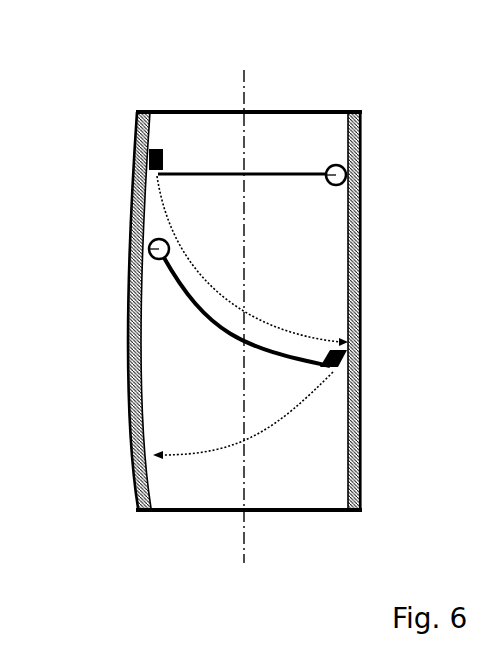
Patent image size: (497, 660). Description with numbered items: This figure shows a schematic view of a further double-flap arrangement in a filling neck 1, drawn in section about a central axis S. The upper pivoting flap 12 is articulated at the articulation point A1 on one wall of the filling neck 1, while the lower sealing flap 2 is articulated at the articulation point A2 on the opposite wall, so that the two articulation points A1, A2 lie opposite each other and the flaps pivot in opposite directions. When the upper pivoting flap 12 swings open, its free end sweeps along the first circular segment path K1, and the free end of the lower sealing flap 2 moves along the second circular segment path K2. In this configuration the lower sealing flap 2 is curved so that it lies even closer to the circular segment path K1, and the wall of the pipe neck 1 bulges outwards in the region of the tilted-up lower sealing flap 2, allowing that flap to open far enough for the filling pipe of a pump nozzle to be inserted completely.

The filling neck 1 is at (361, 140).
The lower sealing flap 2 is at (270, 353).
The upper pivoting flap 12 is at (293, 176).
The articulation point A1 is at (361, 182).
The articulation point A2 is at (149, 249).
The circular segment path K1 is at (170, 303).
The circular segment path K2 is at (194, 457).
The axis of symmetry S is at (244, 75).